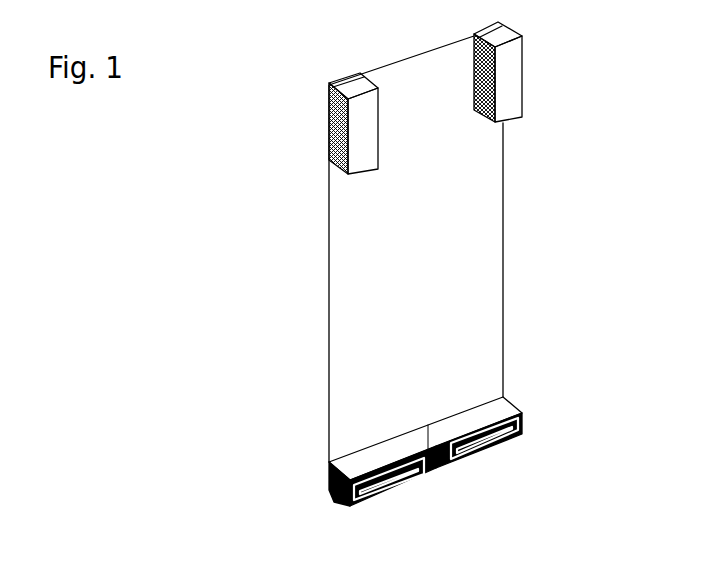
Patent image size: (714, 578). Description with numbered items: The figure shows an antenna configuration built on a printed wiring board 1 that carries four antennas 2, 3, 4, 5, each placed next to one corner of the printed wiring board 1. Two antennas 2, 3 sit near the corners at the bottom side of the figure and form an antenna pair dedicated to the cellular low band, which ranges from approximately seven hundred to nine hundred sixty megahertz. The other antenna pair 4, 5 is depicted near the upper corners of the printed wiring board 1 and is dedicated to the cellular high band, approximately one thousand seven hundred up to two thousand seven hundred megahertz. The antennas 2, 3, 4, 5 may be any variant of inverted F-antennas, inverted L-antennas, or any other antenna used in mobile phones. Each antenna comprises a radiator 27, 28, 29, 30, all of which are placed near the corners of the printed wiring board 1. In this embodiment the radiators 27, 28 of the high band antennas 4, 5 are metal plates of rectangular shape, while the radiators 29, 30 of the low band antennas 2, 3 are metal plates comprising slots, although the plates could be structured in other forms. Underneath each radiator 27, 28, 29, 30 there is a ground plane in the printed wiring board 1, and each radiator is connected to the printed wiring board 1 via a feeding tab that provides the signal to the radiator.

The printed wiring board 1 is at (377, 337).
The antenna 2 is at (330, 492).
The antenna 3 is at (522, 426).
The antenna 4 is at (512, 92).
The antenna 5 is at (360, 143).
The radiator 27 is at (512, 62).
The radiator 28 is at (343, 172).
The radiator 29 is at (522, 406).
The radiator 30 is at (347, 507).